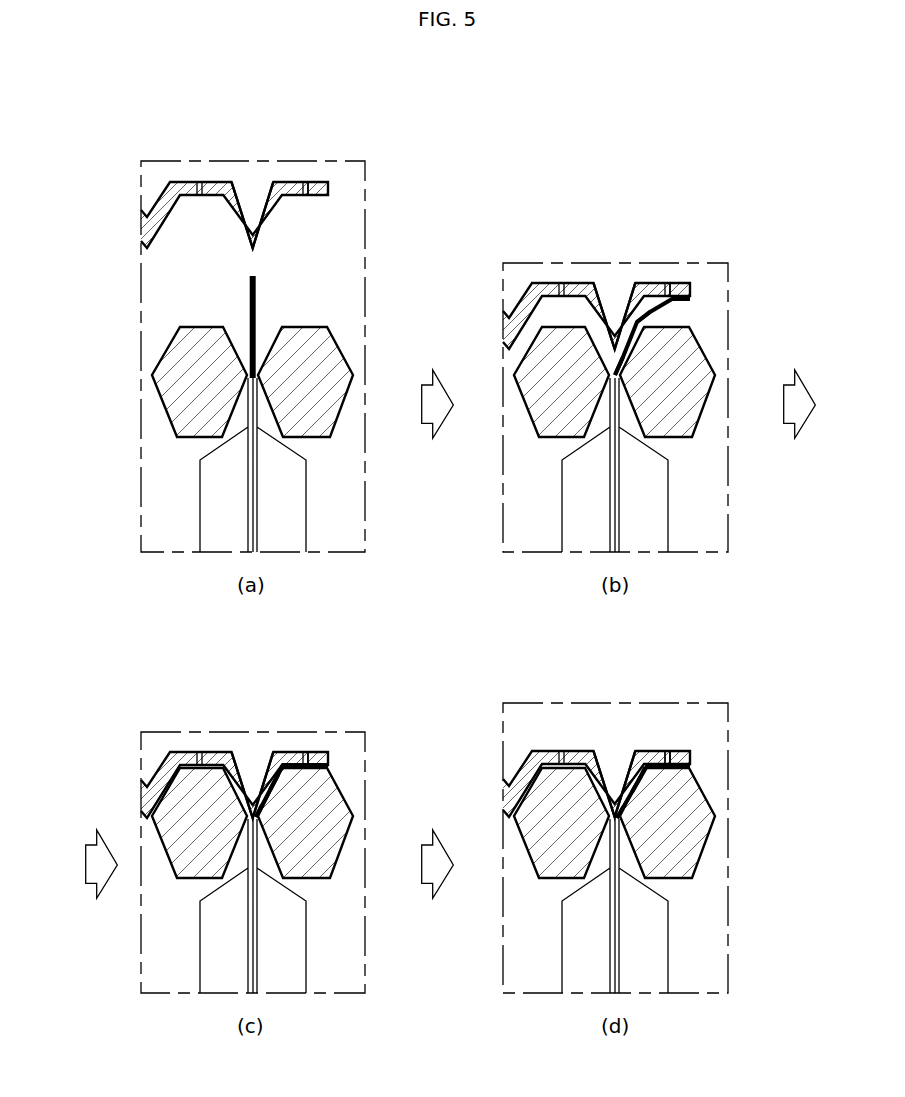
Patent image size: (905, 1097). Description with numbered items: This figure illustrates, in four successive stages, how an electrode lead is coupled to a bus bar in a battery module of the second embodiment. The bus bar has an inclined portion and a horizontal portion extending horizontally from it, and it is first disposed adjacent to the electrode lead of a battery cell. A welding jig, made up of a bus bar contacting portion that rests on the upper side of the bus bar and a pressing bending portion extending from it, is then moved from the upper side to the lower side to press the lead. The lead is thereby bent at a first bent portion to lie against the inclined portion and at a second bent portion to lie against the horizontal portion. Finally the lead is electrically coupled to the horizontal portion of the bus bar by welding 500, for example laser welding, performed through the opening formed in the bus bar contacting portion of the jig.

The welding 500 is at (671, 762).